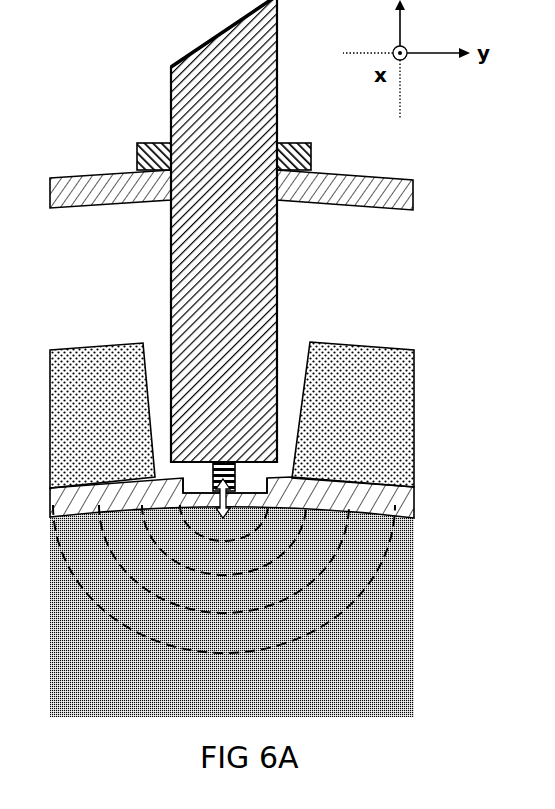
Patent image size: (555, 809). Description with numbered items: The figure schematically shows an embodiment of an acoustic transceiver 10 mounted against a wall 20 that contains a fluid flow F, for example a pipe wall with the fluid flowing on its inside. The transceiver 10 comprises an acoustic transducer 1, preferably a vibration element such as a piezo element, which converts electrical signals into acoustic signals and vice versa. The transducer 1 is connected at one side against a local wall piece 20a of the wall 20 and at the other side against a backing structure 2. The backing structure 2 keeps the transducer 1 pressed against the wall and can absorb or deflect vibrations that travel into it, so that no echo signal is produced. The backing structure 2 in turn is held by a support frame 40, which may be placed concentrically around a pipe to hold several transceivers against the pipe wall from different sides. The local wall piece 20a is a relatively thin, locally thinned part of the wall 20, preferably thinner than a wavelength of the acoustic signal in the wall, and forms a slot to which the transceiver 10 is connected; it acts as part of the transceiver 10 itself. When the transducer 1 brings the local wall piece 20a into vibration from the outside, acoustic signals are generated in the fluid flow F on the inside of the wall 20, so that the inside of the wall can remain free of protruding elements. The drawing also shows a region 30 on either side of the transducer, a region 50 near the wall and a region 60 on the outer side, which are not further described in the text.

The acoustic transceiver 10 is at (73, 65).
The backing structure 2 is at (212, 267).
The acoustic transducer 1 is at (208, 475).
The wall 20 is at (550, 510).
The local wall piece 20a is at (254, 476).
The support member 30 is at (419, 413).
The support frame 40 is at (416, 203).
The lower space 50 is at (554, 333).
The upper space 60 is at (554, 95).
The fluid flow F is at (239, 689).